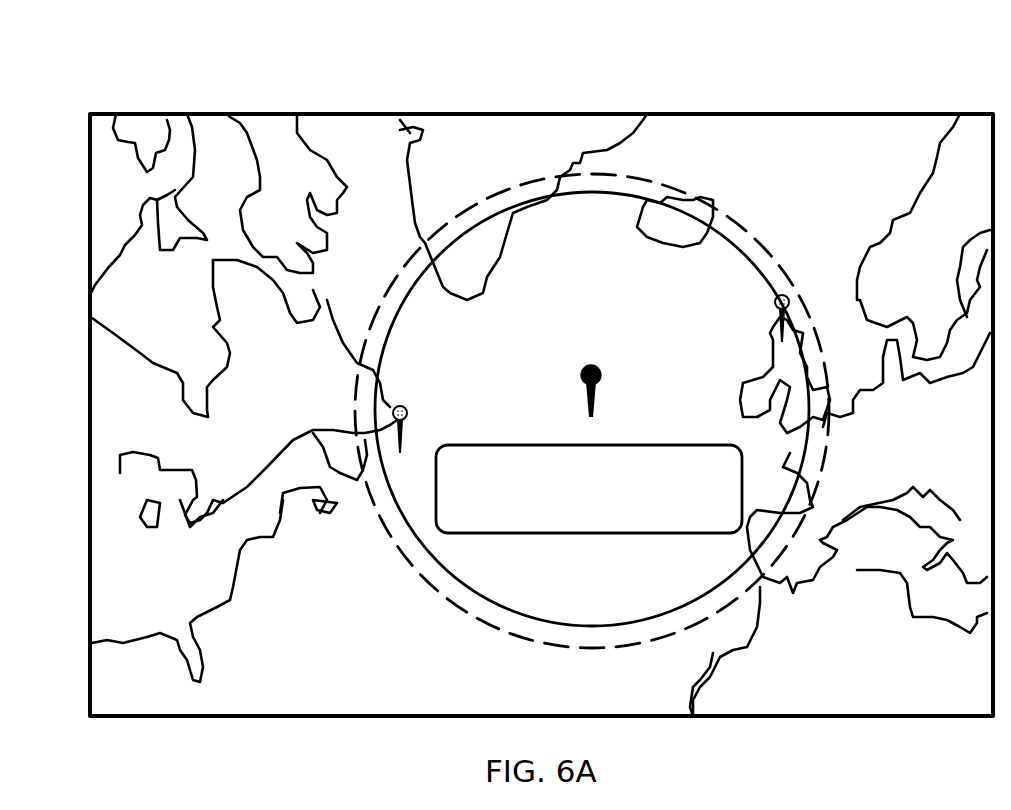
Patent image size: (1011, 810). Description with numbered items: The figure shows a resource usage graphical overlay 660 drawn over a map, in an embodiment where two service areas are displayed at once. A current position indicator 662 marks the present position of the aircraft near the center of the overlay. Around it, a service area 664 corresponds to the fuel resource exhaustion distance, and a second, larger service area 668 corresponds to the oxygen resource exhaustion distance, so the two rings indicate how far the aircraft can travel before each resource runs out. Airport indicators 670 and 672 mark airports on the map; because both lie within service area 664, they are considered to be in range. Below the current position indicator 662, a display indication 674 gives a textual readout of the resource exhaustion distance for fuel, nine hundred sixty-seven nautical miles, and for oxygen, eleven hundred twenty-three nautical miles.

The resource usage graphical overlay 660 is at (74, 70).
The current position indicator 662 is at (593, 365).
The service area 664 is at (478, 592).
The service area 668 is at (738, 222).
The airport indicator 670 is at (404, 405).
The airport indicator 672 is at (775, 306).
The display indication 674 is at (714, 445).